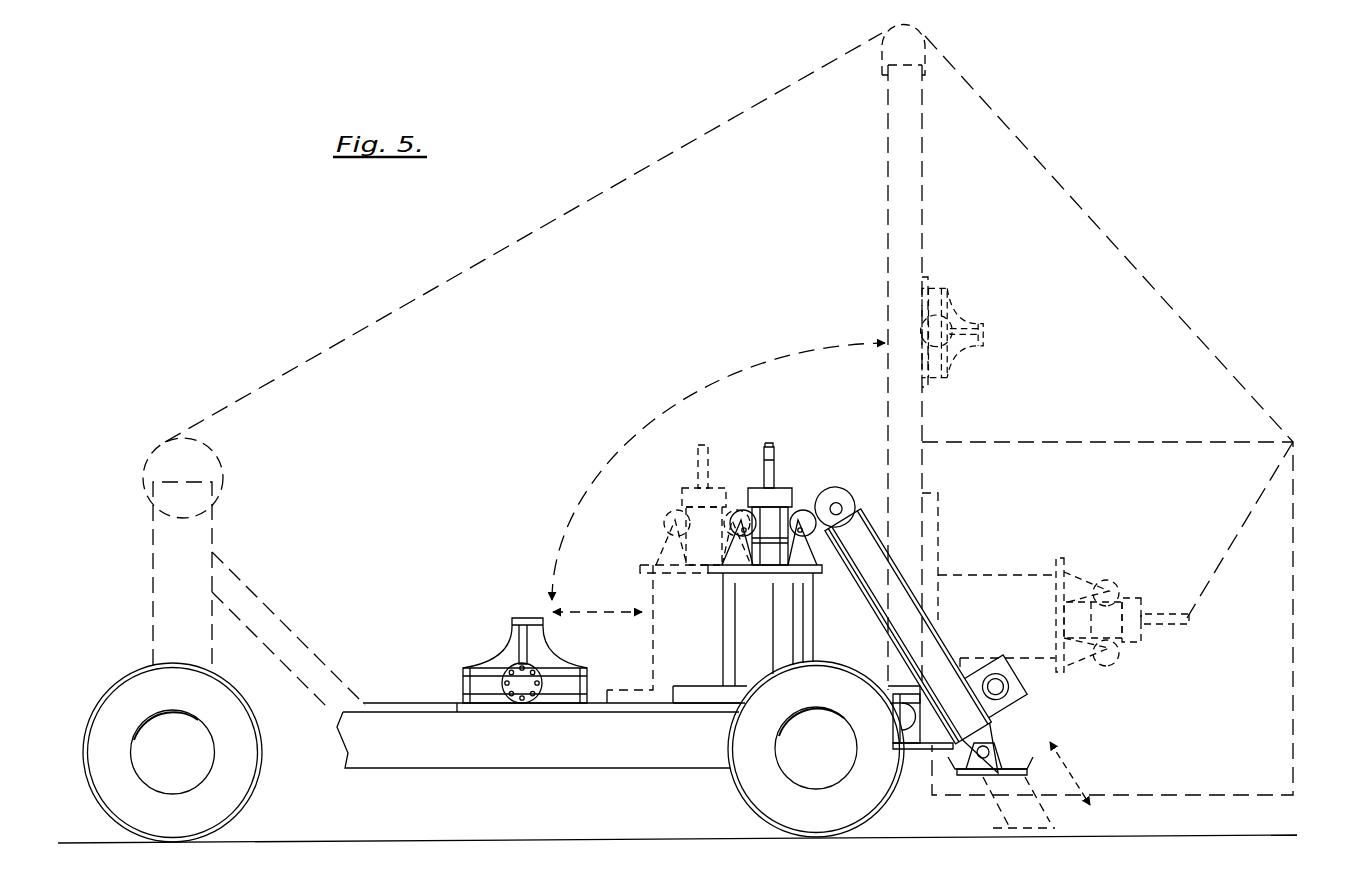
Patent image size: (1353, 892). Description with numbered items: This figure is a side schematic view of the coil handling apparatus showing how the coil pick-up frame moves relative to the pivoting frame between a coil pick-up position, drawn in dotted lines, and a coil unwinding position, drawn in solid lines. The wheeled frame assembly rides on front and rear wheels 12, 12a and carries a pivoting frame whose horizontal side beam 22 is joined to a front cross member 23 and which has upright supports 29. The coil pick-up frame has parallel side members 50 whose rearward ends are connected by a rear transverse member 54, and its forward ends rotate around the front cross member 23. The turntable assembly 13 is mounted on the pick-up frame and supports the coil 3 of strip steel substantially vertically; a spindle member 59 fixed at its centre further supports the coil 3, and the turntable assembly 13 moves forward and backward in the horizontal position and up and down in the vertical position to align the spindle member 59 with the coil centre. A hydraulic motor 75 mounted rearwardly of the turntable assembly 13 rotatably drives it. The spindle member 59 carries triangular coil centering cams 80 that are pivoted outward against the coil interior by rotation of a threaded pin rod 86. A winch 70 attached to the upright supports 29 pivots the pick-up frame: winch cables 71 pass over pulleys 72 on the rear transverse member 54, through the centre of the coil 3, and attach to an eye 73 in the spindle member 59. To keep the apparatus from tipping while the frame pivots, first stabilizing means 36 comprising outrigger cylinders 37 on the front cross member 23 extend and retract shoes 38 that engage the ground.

The coil of strip steel 3 is at (1295, 515).
The front wheel 12 is at (758, 771).
The rear wheel 12a is at (238, 768).
The turntable assembly 13 is at (680, 690).
The side beam 22 is at (553, 750).
The front cross member 23 is at (893, 705).
The upright support 29 is at (165, 550).
The first stabilizing means 36 is at (1040, 685).
The outrigger cylinder 37 is at (895, 612).
The shoe 38 is at (1002, 752).
The side member 50 is at (920, 432).
The rear transverse member 54 is at (880, 70).
The spindle member 59 is at (795, 618).
The winch 70 is at (170, 443).
The winch cable 71 is at (575, 207).
The pulley 72 is at (922, 36).
The eye 73 is at (770, 443).
The hydraulic motor 75 is at (515, 652).
The coil centering cam 80 is at (803, 510).
The threaded pin rod 86 is at (750, 495).